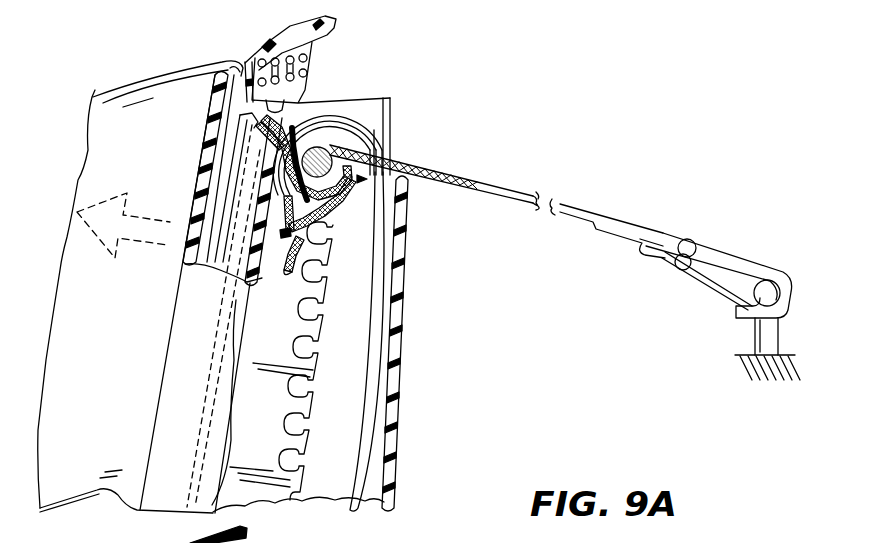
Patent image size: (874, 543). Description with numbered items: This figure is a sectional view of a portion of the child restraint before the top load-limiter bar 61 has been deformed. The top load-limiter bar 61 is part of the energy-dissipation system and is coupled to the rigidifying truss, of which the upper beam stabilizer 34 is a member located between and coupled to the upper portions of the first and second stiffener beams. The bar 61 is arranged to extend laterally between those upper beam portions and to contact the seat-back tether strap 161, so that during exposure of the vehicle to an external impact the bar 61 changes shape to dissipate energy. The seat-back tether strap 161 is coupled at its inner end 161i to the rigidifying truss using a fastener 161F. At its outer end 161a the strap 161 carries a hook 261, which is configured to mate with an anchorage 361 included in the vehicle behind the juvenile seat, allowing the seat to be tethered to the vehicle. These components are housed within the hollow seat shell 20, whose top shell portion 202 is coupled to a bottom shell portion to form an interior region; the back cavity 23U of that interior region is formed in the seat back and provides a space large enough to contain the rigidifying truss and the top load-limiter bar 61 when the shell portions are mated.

The top load-limiter bar 61 is at (325, 156).
The seat-back tether strap 161 is at (526, 184).
The rod end link 161a is at (593, 210).
The hook 261 is at (737, 257).
The anchorage 361 is at (763, 333).
The fastener 161F is at (332, 240).
The hollow seat shell 20 is at (410, 315).
The back cavity 23U is at (350, 299).
The top shell portion 202 is at (400, 480).
The inner end 161i is at (283, 268).
The upper beam stabilizer 34 is at (242, 490).